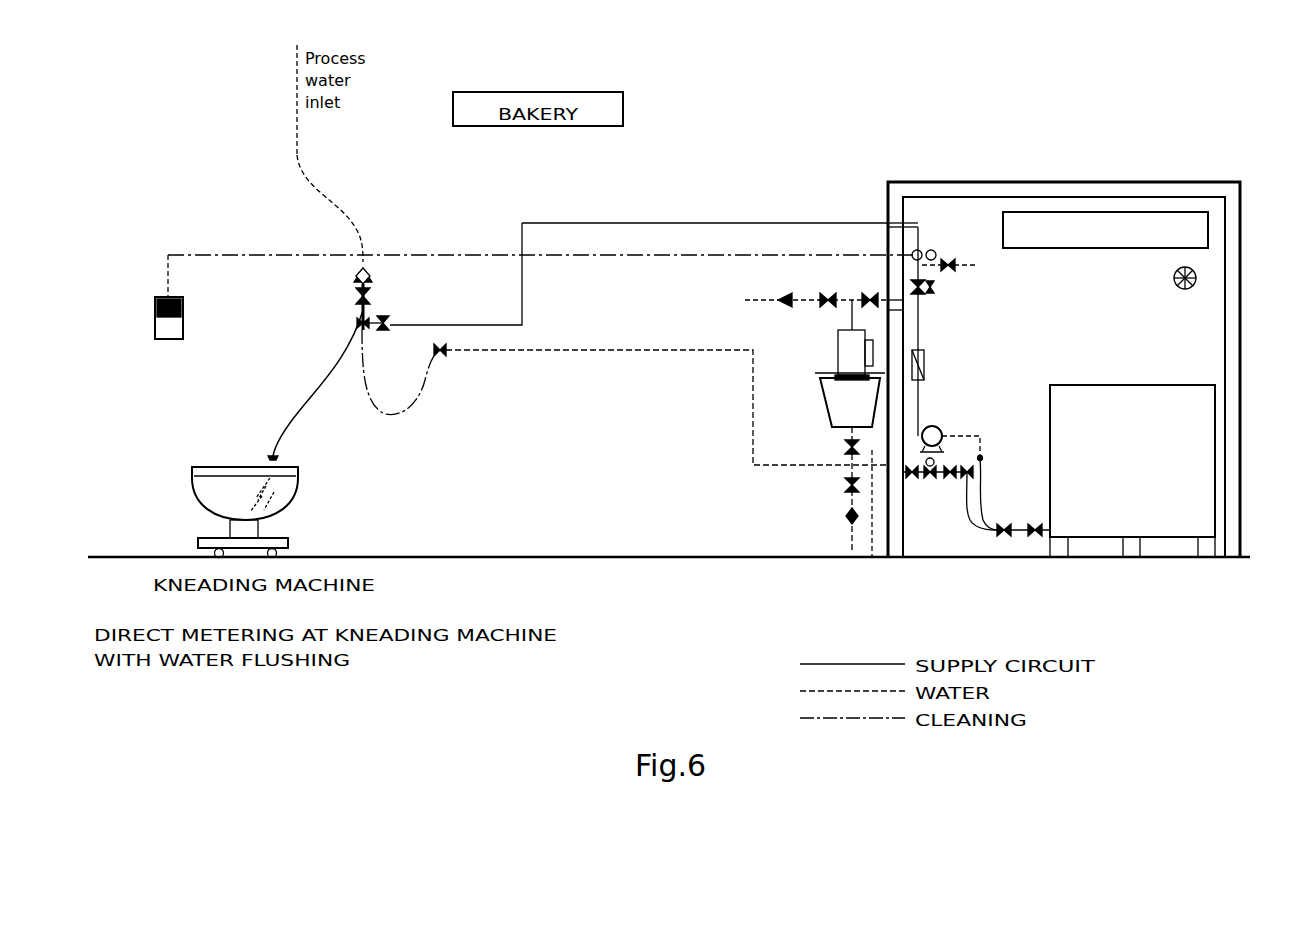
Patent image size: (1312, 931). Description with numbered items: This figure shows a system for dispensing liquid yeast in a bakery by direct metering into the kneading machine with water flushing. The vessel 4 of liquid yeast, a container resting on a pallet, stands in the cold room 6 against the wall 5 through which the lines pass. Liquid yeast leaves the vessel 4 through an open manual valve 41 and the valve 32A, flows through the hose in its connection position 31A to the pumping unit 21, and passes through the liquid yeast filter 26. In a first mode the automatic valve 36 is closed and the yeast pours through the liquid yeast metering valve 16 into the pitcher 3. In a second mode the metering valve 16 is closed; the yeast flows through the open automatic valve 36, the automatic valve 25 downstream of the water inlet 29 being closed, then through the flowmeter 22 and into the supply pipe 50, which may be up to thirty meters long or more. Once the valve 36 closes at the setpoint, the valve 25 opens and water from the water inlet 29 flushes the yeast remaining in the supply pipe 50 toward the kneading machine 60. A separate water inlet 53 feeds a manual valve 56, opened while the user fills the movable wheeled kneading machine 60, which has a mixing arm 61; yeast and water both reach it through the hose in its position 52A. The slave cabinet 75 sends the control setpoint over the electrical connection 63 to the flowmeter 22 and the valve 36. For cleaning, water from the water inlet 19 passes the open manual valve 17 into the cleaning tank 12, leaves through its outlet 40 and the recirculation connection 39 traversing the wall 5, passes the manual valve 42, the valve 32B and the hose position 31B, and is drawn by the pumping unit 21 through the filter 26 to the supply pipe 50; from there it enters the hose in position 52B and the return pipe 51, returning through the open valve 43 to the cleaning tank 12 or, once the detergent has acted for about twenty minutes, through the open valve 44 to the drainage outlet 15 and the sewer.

The pitcher 3 is at (838, 360).
The vessel 4 is at (1203, 512).
The wall 5 is at (907, 542).
The cold room 6 is at (1200, 343).
The cleaning tank 12 is at (830, 396).
The drainage outlet 15 is at (862, 543).
The liquid yeast metering valve 16 is at (870, 292).
The wash water metering valve 17 is at (822, 300).
The water inlet 19 is at (733, 322).
The pumping unit 21 is at (950, 428).
The flowmeter 22 is at (924, 250).
The automatic valve 25 is at (935, 268).
The liquid yeast filter 26 is at (926, 360).
The water inlet 29 is at (1050, 280).
The hose connection position for liquid yeast 31A is at (995, 480).
The hose connection position for wash water 31B is at (970, 525).
The manual valve connection position for liquid yeast 32A is at (997, 532).
The manual valve connection position for wash water 32B is at (962, 518).
The automatic valve 36 is at (930, 290).
The recirculation connection 39 is at (873, 557).
The outlet 40 is at (860, 462).
The manual valve 41 is at (1040, 538).
The manual valve 42 is at (915, 476).
The valve 43 is at (846, 450).
The valve 44 is at (846, 487).
The supply pipe 50 is at (522, 285).
The return pipe 51 is at (753, 408).
The hose connection position above kneading machine 52A is at (328, 390).
The hose connection position to return pipe 52B is at (378, 414).
The water inlet 53 is at (297, 160).
The manual valve 56 is at (378, 300).
The kneading machine 60 is at (197, 505).
The mixing arm 61 is at (295, 500).
The electrical connection 63 is at (610, 257).
The slave cabinet 75 is at (155, 302).